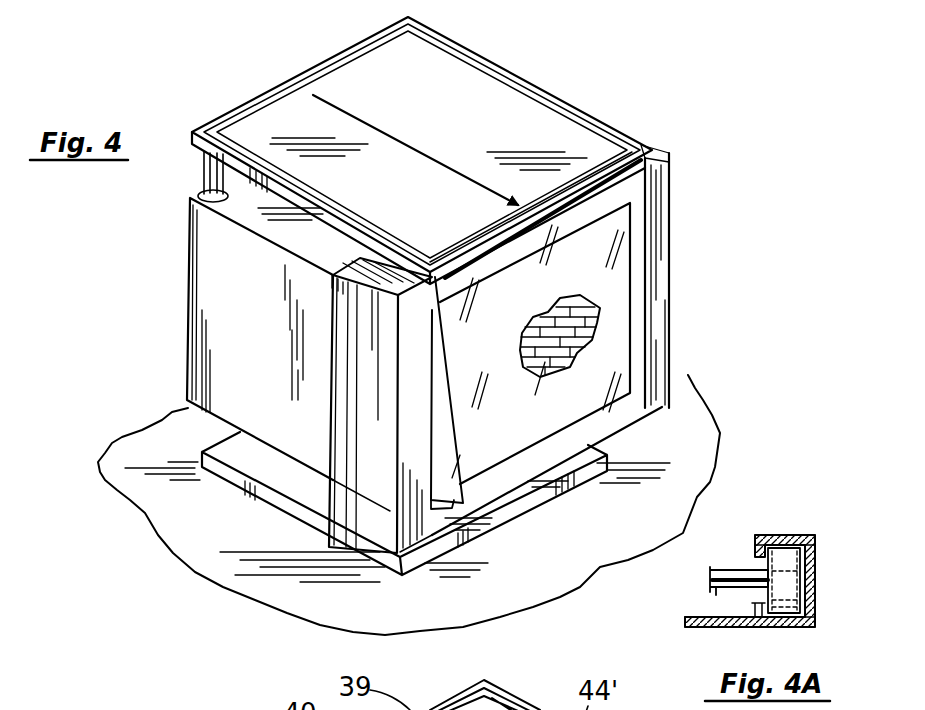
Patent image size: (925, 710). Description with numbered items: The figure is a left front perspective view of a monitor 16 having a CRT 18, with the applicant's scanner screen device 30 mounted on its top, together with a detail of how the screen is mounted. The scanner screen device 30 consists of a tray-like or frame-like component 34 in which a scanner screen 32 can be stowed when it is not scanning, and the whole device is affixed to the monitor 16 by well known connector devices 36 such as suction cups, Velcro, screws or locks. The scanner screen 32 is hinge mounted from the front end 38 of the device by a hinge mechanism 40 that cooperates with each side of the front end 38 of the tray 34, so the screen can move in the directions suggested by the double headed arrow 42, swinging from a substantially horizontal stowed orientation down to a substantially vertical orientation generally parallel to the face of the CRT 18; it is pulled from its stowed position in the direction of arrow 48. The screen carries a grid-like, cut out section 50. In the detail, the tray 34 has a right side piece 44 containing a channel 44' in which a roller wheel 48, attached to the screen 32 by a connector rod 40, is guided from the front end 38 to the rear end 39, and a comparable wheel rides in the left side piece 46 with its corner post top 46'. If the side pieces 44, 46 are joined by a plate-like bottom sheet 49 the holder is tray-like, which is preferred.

In FIG. 4, the scanner screen device 30 is at (233, 92).
In FIG. 4, the rear end 39 is at (320, 62).
In FIG. 4, the tray-like and/or frame-like component 34 is at (463, 127).
In FIG. 4A, the tray-like and/or frame-like component 34 is at (800, 517).
In FIG. 4, the side piece 44 is at (572, 175).
In FIG. 4A, the side piece 44 is at (785, 489).
In FIG. 4, the channel 44' is at (562, 166).
In FIG. 4A, the channel 44' is at (739, 535).
In FIG. 4, the roller wheel 48 is at (393, 137).
In FIG. 4A, the roller wheel 48 is at (793, 563).
In FIG. 4, the hinge mechanism 40 is at (643, 158).
In FIG. 4A, the hinge mechanism 40 is at (757, 592).
In FIG. 4, the corner post top 46' is at (382, 223).
In FIG. 4, the left side piece 46 is at (319, 382).
In FIG. 4, the front end 38 is at (671, 198).
In FIG. 4, the connector devices 36 is at (200, 183).
In FIG. 4, the monitor 16 is at (250, 326).
In FIG. 4, the grid-like cut out section 50 is at (597, 327).
In FIG. 4, the CRT 18 is at (445, 440).
In FIG. 4, the scanner screen 32 is at (440, 437).
In FIG. 4, the double headed arrow 42 is at (443, 505).
In FIG. 4A, the bottom sheet 49 is at (720, 620).